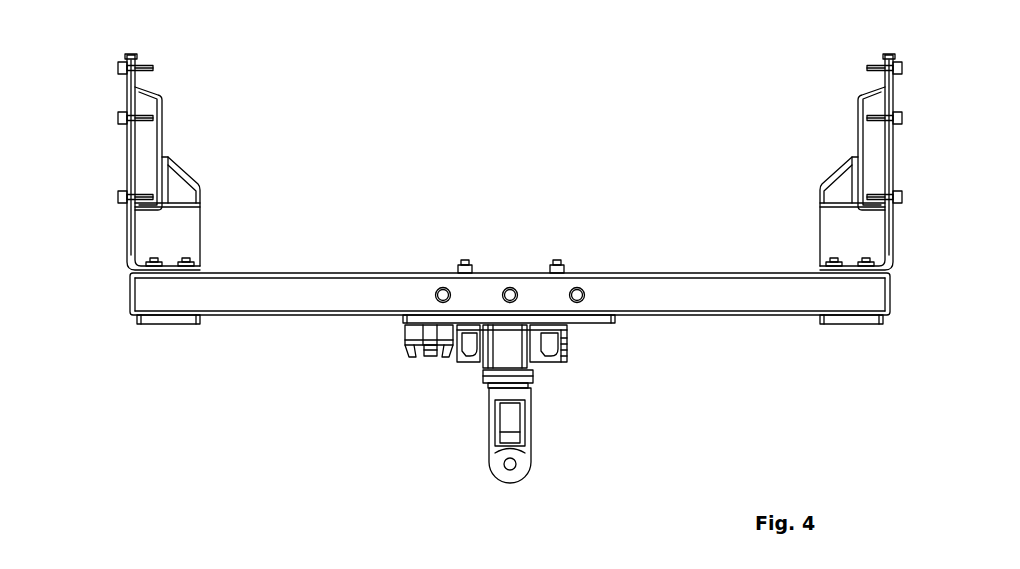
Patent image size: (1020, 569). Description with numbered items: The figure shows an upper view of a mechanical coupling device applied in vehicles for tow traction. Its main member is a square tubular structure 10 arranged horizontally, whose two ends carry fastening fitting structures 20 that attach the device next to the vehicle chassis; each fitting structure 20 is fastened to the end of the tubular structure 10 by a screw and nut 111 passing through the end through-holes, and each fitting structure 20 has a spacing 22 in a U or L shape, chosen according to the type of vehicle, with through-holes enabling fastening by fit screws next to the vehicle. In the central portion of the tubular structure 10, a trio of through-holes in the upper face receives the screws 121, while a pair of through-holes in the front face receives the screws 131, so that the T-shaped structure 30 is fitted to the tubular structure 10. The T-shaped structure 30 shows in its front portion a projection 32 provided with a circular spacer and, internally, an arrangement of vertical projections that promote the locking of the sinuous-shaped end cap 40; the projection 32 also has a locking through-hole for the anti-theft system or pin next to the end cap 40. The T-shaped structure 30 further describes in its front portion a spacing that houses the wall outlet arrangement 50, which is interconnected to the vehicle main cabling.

The square tubular structure 10 is at (305, 273).
The fastening fitting structure 20 is at (183, 172).
The spacing 22 is at (169, 324).
The T-shaped structure 30 is at (607, 323).
The projection 32 is at (510, 350).
The end cap 40 is at (490, 423).
The wall outlet arrangement 50 is at (413, 357).
The screw and nut 111 is at (188, 258).
The screws 121 is at (440, 280).
The screws 131 is at (553, 260).